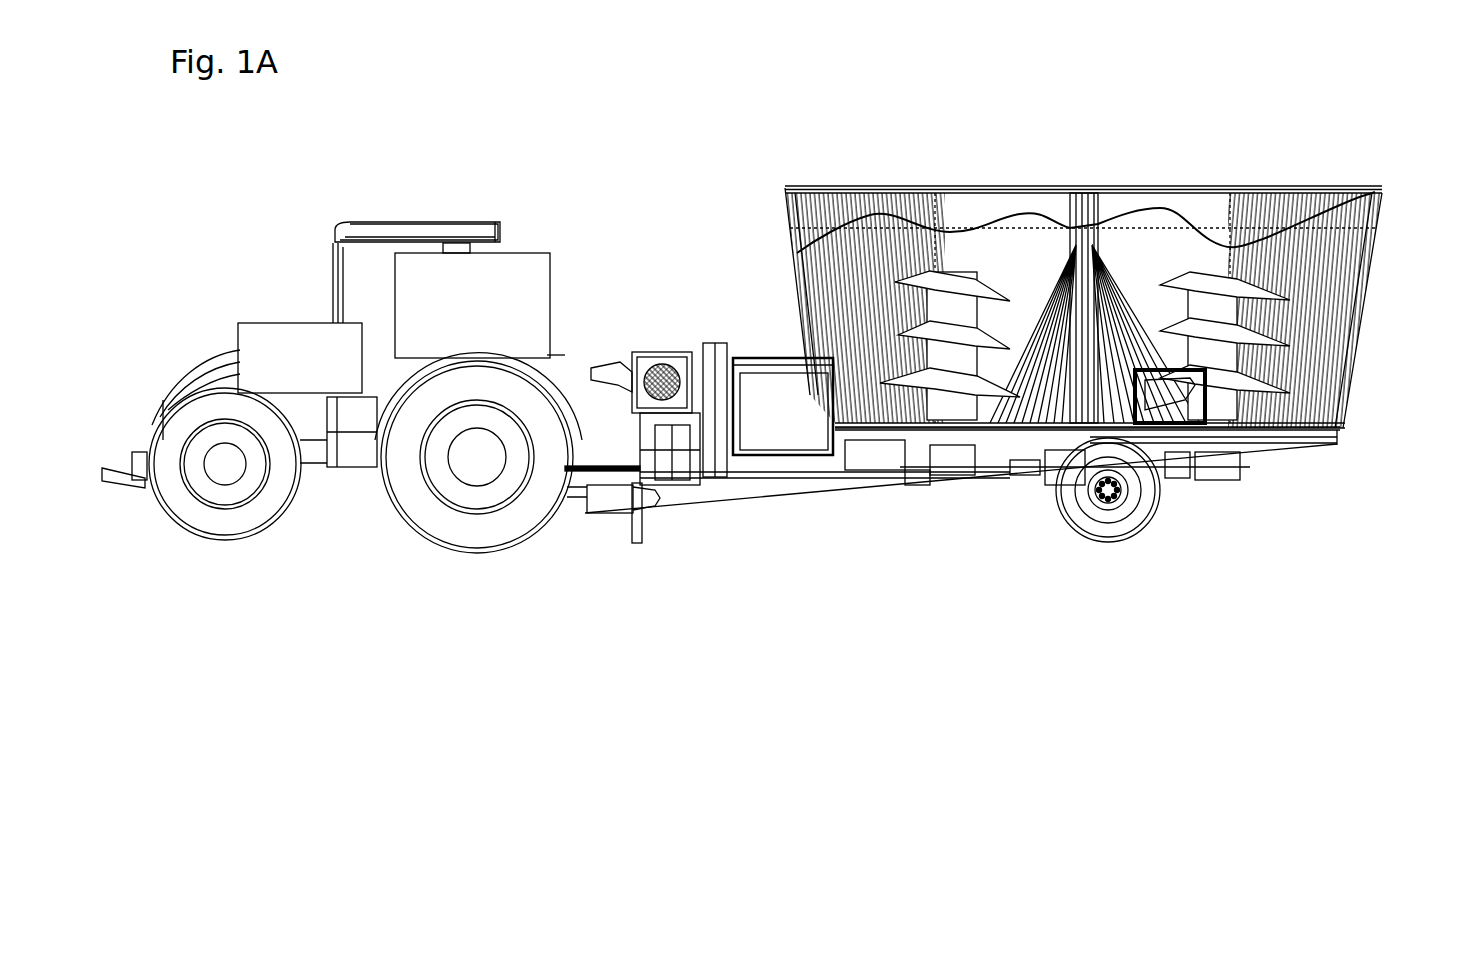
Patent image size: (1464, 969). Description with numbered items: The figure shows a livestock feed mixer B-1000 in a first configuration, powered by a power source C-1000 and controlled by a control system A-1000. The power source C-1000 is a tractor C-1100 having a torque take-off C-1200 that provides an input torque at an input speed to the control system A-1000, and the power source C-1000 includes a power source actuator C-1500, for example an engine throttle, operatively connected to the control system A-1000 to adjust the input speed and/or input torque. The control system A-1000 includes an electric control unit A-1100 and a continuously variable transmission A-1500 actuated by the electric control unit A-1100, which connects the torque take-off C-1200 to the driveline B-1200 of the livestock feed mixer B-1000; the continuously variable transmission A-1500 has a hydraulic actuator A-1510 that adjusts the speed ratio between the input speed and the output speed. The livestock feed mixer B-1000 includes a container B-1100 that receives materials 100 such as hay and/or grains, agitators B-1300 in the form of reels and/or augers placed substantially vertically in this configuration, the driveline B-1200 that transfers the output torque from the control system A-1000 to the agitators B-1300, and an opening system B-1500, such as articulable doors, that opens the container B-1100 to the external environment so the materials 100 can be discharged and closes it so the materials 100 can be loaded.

The materials 100 is at (1160, 205).
The power source C-1000 is at (250, 268).
The tractor C-1100 is at (477, 233).
The power source actuator C-1500 is at (335, 400).
The torque take-off C-1200 is at (590, 513).
The control system A-1000 is at (632, 573).
The electric control unit A-1100 is at (550, 358).
The continuously variable transmission A-1500 is at (707, 502).
The hydraulic actuator A-1510 is at (715, 450).
The livestock feed mixer B-1000 is at (1077, 167).
The container B-1100 is at (863, 190).
The driveline B-1200 is at (898, 478).
The agitators B-1300 is at (1212, 378).
The opening system B-1500 is at (1207, 370).